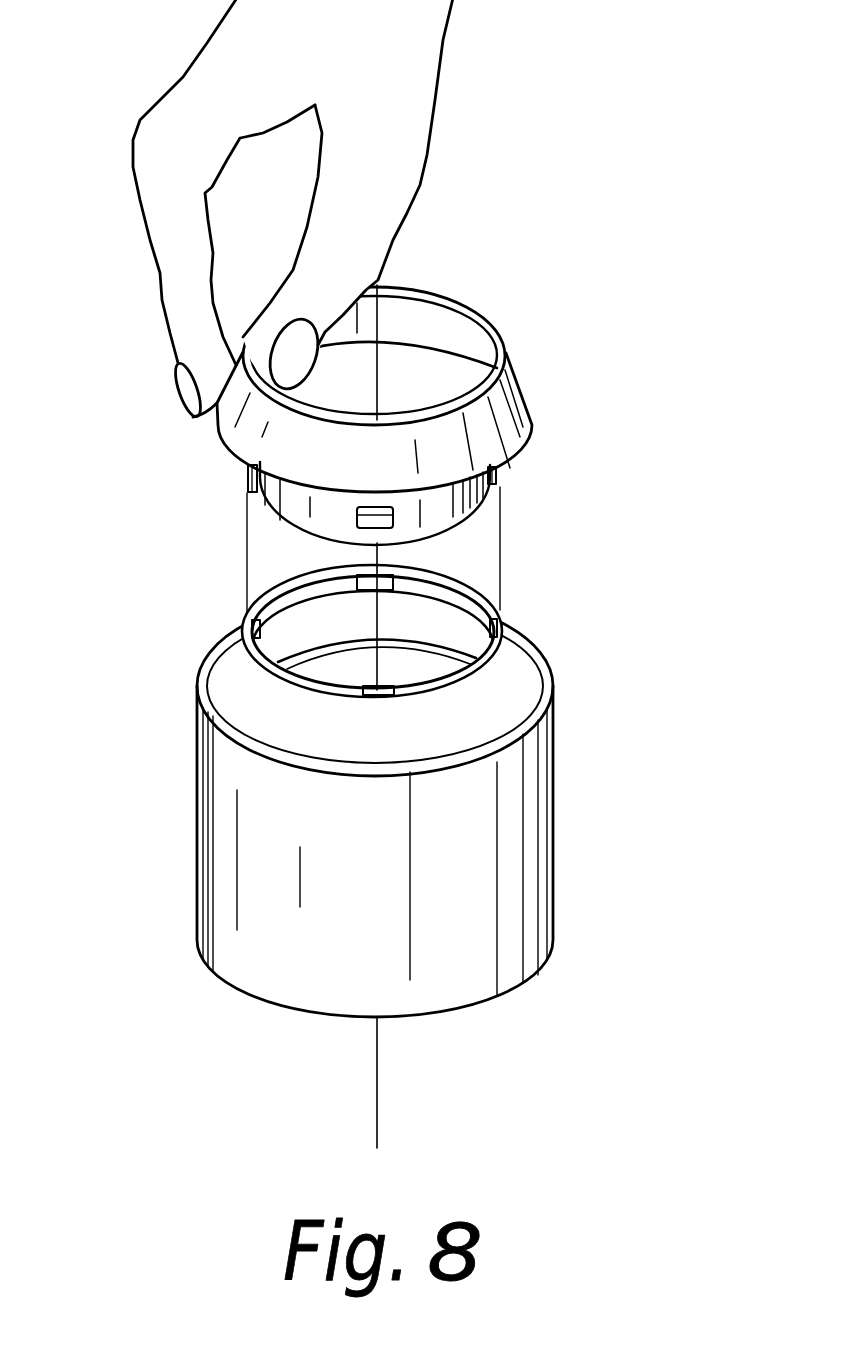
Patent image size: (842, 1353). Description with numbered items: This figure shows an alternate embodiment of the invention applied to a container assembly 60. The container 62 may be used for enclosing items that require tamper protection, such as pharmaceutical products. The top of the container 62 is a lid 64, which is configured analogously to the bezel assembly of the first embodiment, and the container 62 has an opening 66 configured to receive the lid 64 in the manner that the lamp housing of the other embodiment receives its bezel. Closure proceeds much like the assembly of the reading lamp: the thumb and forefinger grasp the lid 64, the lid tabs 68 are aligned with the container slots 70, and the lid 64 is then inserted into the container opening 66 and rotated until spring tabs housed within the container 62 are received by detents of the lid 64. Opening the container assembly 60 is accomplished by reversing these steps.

The container assembly 60 is at (368, 574).
The container 62 is at (250, 863).
The lid 64 is at (371, 415).
The opening 66 is at (370, 595).
The lid tabs 68 is at (497, 482).
The container slots 70 is at (502, 613).